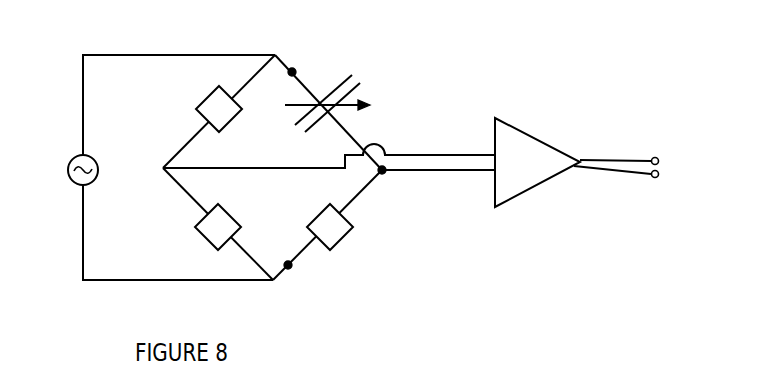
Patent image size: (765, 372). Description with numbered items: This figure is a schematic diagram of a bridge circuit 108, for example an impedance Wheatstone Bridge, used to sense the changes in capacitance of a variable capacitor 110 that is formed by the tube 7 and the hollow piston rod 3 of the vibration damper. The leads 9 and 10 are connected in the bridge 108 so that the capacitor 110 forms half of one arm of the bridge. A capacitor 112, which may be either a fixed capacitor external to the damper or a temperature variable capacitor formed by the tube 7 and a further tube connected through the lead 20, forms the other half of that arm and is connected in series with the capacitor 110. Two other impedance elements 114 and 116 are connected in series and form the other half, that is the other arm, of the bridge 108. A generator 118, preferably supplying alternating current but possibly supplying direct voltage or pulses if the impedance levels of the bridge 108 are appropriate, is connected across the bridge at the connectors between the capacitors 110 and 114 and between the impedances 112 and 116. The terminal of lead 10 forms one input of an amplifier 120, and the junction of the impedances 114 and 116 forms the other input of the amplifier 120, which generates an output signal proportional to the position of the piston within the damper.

The bridge circuit 108 is at (165, 22).
The impedance element 114 is at (204, 101).
The impedance element 116 is at (201, 243).
The capacitor 112 is at (347, 240).
The generator 118 is at (94, 160).
The lead 9 is at (293, 70).
The lead 20 is at (290, 268).
The lead 10 is at (383, 174).
The variable capacitor 110 is at (360, 83).
The piston rod 3 is at (335, 88).
The tube 7 is at (355, 92).
The amplifier 120 is at (523, 133).